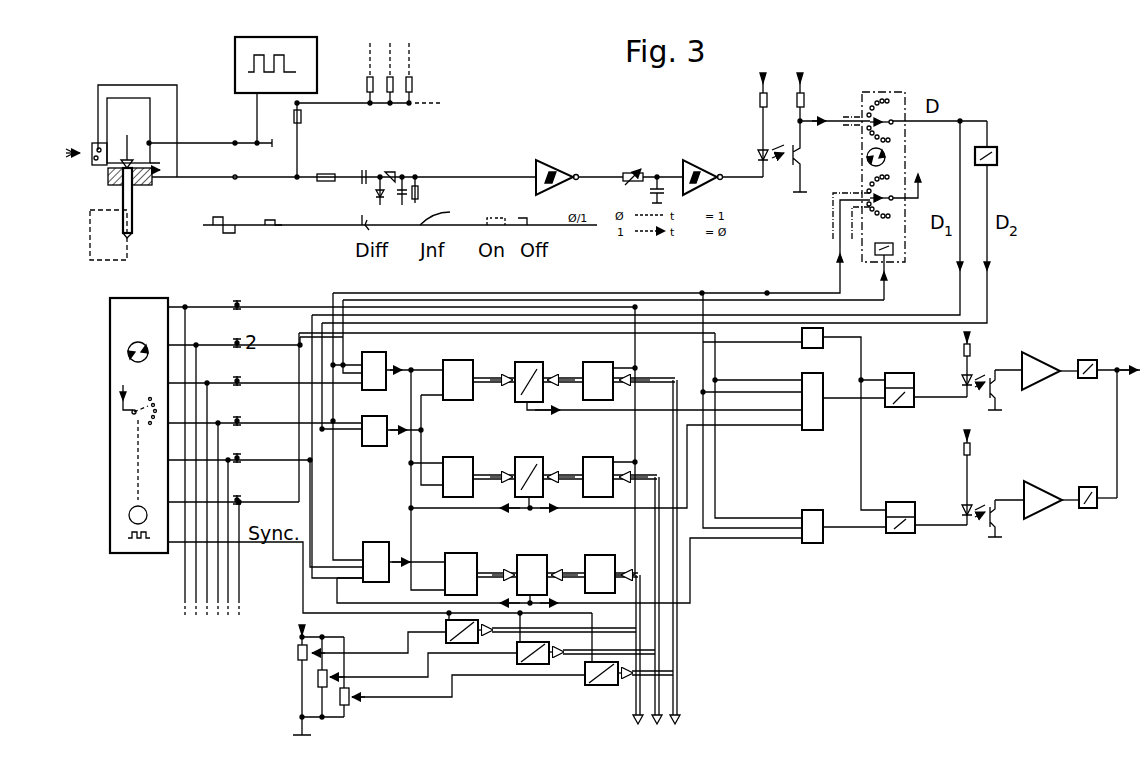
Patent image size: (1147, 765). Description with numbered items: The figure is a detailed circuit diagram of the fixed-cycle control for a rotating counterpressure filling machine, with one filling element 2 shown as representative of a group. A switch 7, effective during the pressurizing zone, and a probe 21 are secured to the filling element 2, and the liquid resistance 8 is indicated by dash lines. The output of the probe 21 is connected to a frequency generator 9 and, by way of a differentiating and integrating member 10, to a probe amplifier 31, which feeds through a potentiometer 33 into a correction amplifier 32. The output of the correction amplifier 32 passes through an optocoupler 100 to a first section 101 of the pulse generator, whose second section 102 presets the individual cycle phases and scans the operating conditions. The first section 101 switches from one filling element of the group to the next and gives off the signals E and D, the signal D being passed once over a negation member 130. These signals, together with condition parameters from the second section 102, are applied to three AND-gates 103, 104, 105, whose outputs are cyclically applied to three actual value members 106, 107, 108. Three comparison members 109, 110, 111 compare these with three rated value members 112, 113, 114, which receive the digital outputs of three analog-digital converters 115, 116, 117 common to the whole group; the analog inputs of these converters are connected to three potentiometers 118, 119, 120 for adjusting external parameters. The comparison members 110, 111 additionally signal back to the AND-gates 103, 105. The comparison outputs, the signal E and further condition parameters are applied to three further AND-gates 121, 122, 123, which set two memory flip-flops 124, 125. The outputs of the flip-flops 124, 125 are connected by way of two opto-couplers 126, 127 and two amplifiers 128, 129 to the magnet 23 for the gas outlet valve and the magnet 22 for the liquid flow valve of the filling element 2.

The filling element 2 is at (135, 67).
The switch 7 is at (92, 160).
The liquid resistance 8 is at (110, 257).
The frequency generator 9 is at (300, 37).
The differentiating and integrating member 10 is at (398, 168).
The probe 21 is at (137, 209).
The magnet for the liquid flow valve 22 is at (1092, 508).
The magnet for the gas outlet valve 23 is at (1092, 360).
The probe amplifier 31 is at (553, 170).
The correction amplifier 32 is at (700, 168).
The potentiometer 33 is at (638, 168).
The optocoupler 100 is at (792, 202).
The first section of pulse generator 101 is at (893, 160).
The second section of pulse generator 102 is at (125, 432).
The first AND-gate 103 is at (380, 362).
The second AND-gate 104 is at (372, 446).
The third AND-gate 105 is at (384, 528).
The actual value member 106 is at (465, 362).
The actual value member 107 is at (458, 460).
The actual value member 108 is at (460, 553).
The comparison member 109 is at (537, 362).
The comparison member 110 is at (537, 460).
The comparison member 111 is at (535, 558).
The rated value member 112 is at (598, 400).
The rated value member 113 is at (600, 497).
The rated value member 114 is at (590, 557).
The analog-digital converter 115 is at (462, 643).
The analog-digital converter 116 is at (532, 664).
The analog-digital converter 117 is at (598, 685).
The potentiometer 118 is at (296, 653).
The potentiometer 119 is at (316, 680).
The potentiometer 120 is at (350, 703).
The AND-gate 121 is at (823, 344).
The AND-gate 122 is at (815, 426).
The AND-gate 123 is at (820, 540).
The memory flip-flop 124 is at (905, 403).
The memory flip-flop 125 is at (905, 505).
The opto-coupler 126 is at (1012, 362).
The opto-coupler 127 is at (1012, 491).
The amplifier 128 is at (1045, 360).
The amplifier 129 is at (1045, 490).
The negation member 130 is at (992, 147).